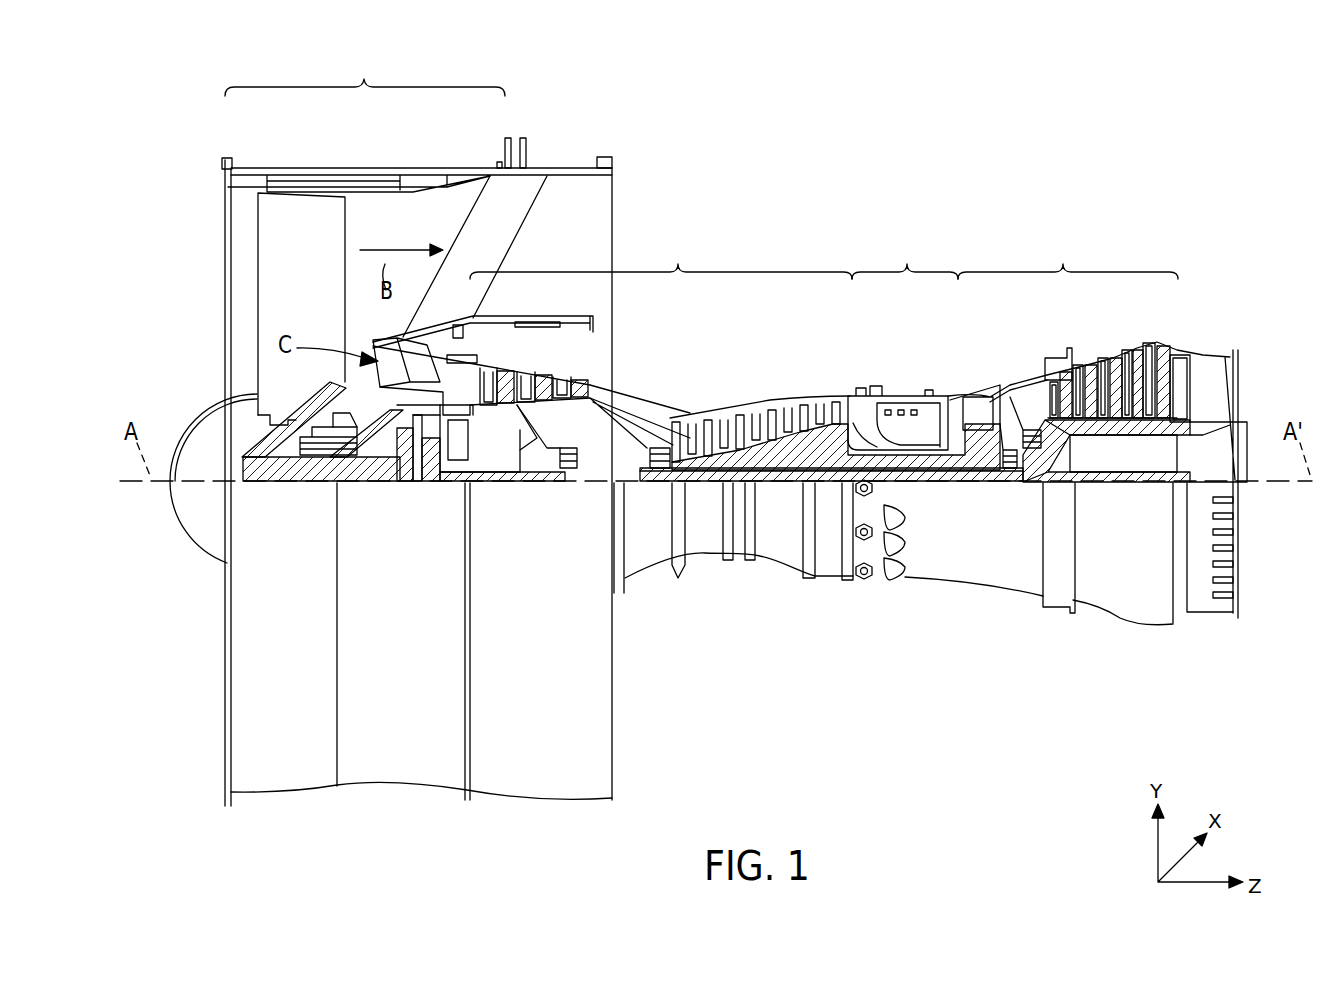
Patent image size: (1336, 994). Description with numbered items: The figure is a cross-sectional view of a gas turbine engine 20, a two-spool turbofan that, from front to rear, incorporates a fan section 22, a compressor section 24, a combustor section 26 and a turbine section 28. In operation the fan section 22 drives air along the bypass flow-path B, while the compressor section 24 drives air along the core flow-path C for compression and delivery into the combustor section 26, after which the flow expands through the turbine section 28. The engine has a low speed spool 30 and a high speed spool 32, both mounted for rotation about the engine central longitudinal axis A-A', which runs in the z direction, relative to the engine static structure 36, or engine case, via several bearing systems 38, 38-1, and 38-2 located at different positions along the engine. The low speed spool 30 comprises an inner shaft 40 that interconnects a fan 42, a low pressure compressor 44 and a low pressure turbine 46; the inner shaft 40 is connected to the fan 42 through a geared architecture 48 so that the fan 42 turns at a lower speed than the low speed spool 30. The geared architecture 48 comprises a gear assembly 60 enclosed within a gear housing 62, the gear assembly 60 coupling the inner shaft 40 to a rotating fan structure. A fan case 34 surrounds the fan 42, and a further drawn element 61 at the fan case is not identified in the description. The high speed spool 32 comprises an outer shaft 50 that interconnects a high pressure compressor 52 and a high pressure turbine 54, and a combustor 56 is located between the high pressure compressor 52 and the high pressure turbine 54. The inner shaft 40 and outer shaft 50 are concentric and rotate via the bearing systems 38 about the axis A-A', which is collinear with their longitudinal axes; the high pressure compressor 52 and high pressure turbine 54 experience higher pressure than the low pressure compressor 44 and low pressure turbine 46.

The gas turbine engine 20 is at (958, 203).
The fan section 22 is at (386, 196).
The compressor section 24 is at (661, 257).
The combustor section 26 is at (905, 257).
The turbine section 28 is at (1068, 257).
The low speed spool 30 is at (786, 502).
The high speed spool 32 is at (825, 440).
The fan case 34 is at (302, 172).
The engine static structure 36 is at (990, 565).
The bearing system 38 is at (1012, 468).
The bearing system 38-1 is at (312, 458).
The bearing system 38-2 is at (573, 468).
The inner shaft 40 is at (637, 488).
The fan 42 is at (310, 297).
The low pressure compressor 44 is at (548, 377).
The low pressure turbine 46 is at (1110, 365).
The geared architecture 48 is at (430, 502).
The outer shaft 50 is at (904, 470).
The high pressure compressor 52 is at (765, 445).
The high pressure turbine 54 is at (977, 397).
The combustor 56 is at (900, 418).
The gear assembly 60 is at (437, 462).
The nacelle 61 is at (225, 232).
The gear housing 62 is at (432, 423).